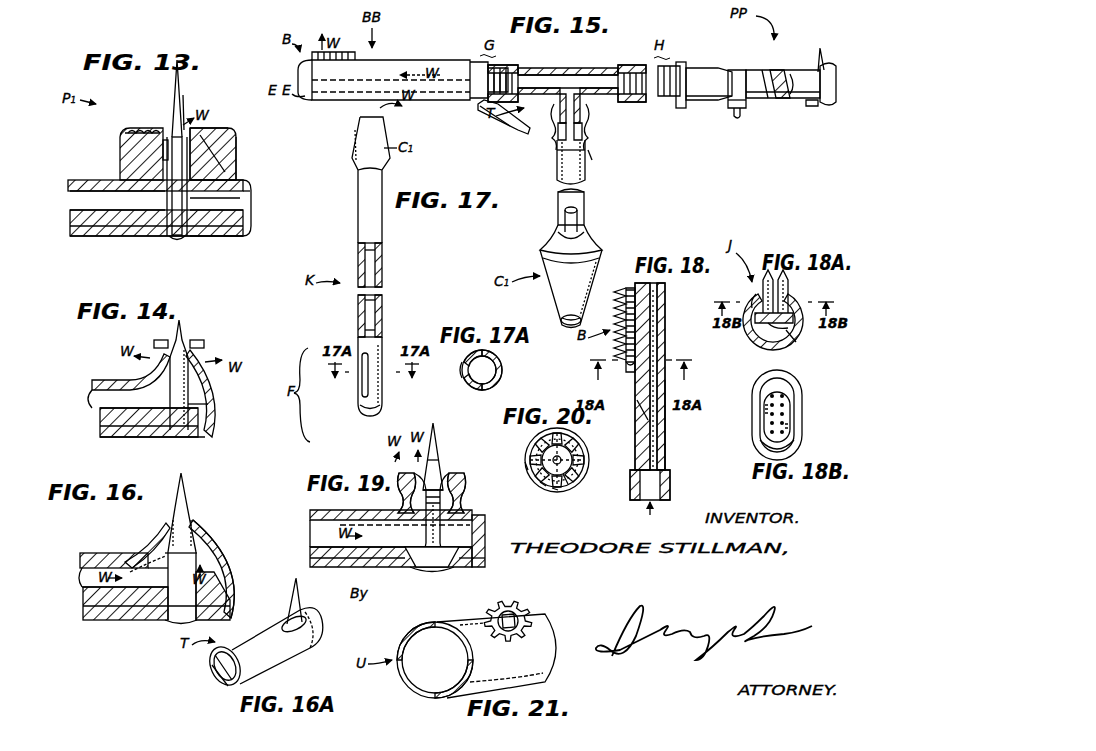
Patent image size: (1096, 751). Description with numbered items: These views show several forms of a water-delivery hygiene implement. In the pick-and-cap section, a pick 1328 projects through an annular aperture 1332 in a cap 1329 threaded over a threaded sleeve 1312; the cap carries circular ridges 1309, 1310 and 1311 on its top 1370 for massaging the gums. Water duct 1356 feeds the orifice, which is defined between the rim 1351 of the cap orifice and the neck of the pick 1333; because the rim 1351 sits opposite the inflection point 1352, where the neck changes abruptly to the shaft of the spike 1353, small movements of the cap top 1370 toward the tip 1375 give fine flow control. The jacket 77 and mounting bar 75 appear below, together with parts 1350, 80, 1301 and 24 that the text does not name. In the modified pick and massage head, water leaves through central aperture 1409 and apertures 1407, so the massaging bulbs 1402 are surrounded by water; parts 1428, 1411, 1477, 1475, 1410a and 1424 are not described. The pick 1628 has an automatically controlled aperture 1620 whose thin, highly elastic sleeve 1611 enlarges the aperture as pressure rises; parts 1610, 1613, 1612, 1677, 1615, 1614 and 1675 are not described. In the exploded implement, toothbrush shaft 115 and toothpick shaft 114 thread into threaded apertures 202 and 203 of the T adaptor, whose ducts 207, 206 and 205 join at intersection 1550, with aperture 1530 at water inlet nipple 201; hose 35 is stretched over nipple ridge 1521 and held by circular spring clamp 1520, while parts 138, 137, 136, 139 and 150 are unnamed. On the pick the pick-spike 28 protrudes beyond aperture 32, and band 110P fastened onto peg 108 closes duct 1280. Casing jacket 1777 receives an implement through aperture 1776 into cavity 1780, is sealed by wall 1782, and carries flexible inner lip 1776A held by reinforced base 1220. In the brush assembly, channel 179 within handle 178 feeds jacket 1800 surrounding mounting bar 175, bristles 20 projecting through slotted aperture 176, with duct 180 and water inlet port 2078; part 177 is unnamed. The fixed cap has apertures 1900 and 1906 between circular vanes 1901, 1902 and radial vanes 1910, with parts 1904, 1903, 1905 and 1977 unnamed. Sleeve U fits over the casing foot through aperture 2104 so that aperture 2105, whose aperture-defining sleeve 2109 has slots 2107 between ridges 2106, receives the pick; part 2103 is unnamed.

In FIG. 13, the tip of pick 1375 is at (180, 75).
In FIG. 13, the shaft of spike 1353 is at (183, 95).
In FIG. 13, the top of cap 1370 is at (132, 128).
In FIG. 13, the annular aperture 1332 is at (166, 140).
In FIG. 13, the pick 1328 is at (186, 112).
In FIG. 13, the inflection point 1352 is at (210, 128).
In FIG. 13, the circular ridge 1309 is at (190, 160).
In FIG. 13, the circular ridge 1311 is at (145, 135).
In FIG. 13, the rim of cap orifice 1351 is at (165, 146).
In FIG. 13, the neck of pick 1333 is at (172, 158).
In FIG. 13, the circular ridge 1310 is at (222, 134).
In FIG. 13, the cap 1329 is at (236, 146).
In FIG. 13, the threaded sleeve 1312 is at (233, 160).
In FIG. 13, the pipe upper wall 1350 is at (240, 178).
In FIG. 13, the pipe end 80 is at (238, 204).
In FIG. 13, the water duct 1356 is at (268, 192).
In FIG. 13, the pipe lower wall 1301 is at (240, 226).
In FIG. 13, the jacket 77 is at (70, 185).
In FIG. 15, the jacket 77 is at (332, 98).
In FIG. 13, the mounting bar 75 is at (72, 220).
In FIG. 15, the mounting bar 75 is at (762, 100).
In FIG. 19, the mounting bar 75 is at (318, 548).
In FIG. 13, the nub 24 is at (178, 242).
In FIG. 15, the nub 24 is at (808, 106).
In FIG. 14, the spike 1428 is at (181, 322).
In FIG. 14, the central aperture 1409 is at (190, 345).
In FIG. 14, the massaging bulb 1402 is at (200, 343).
In FIG. 14, the curved wall 1411 is at (212, 350).
In FIG. 14, the aperture 1407 is at (158, 345).
In FIG. 14, the pipe wall 1477 is at (105, 380).
In FIG. 14, the pipe 1475 is at (102, 410).
In FIG. 14, the inner wall 1410a is at (200, 406).
In FIG. 14, the bottom wall 1424 is at (190, 437).
In FIG. 16, the pick 1628 is at (185, 494).
In FIG. 16A, the pick 1628 is at (300, 600).
In FIG. 16, the hood 1610 is at (214, 522).
In FIG. 16A, the hood 1610 is at (318, 632).
In FIG. 16, the automatically controlled aperture 1620 is at (168, 522).
In FIG. 16A, the automatically controlled aperture 1620 is at (300, 616).
In FIG. 16, the flap 1613 is at (145, 548).
In FIG. 16, the flap hinge 1612 is at (135, 555).
In FIG. 16, the pipe wall 1677 is at (84, 556).
In FIG. 16A, the pipe wall 1677 is at (226, 688).
In FIG. 16, the sleeve 1611 is at (212, 540).
In FIG. 16, the shelf 1615 is at (200, 553).
In FIG. 16, the base block 1614 is at (212, 578).
In FIG. 16, the pipe 1675 is at (100, 595).
In FIG. 16A, the pipe 1675 is at (216, 676).
In FIG. 17, the jacket 1777 is at (383, 245).
In FIG. 17A, the jacket 1777 is at (494, 386).
In FIG. 17, the reinforced base 1220 is at (383, 266).
In FIG. 17A, the reinforced base 1220 is at (497, 368).
In FIG. 17, the cavity 1780 is at (368, 318).
In FIG. 17, the aperture 1776 is at (358, 380).
In FIG. 17, the wall 1782 is at (370, 416).
In FIG. 17A, the inner lip 1776A is at (464, 386).
In FIG. 15, the shaft 115 is at (474, 68).
In FIG. 15, the threaded aperture 202 is at (510, 62).
In FIG. 15, the point of intersection 1550 is at (575, 66).
In FIG. 15, the duct 206 is at (548, 82).
In FIG. 15, the duct 205 is at (592, 82).
In FIG. 15, the threaded aperture 203 is at (638, 62).
In FIG. 15, the duct 207 is at (586, 108).
In FIG. 15, the circular spring clamp 1520 is at (580, 118).
In FIG. 15, the water inlet nipple 201 is at (556, 110).
In FIG. 15, the nipple ridge 1521 is at (548, 154).
In FIG. 15, the hose 35 is at (590, 140).
In FIG. 18, the hose 35 is at (672, 476).
In FIG. 15, the aperture 1530 is at (590, 160).
In FIG. 15, the bore 138 is at (578, 218).
In FIG. 15, the shoulder 137 is at (584, 248).
In FIG. 15, the cone 136 is at (546, 252).
In FIG. 15, the cone wall 139 is at (556, 296).
In FIG. 15, the tip opening 150 is at (566, 322).
In FIG. 15, the shaft 114 is at (676, 70).
In FIG. 15, the band 110P is at (740, 58).
In FIG. 15, the peg 108 is at (734, 118).
In FIG. 15, the aperture 32 is at (812, 64).
In FIG. 15, the pick-spike 28 is at (820, 58).
In FIG. 15, the duct 1280 is at (806, 92).
In FIG. 18, the jacket 1800 is at (633, 287).
In FIG. 18A, the jacket 1800 is at (792, 342).
In FIG. 18, the channel 179 is at (652, 304).
In FIG. 18A, the channel 179 is at (762, 330).
In FIG. 18, the bristles 20 is at (625, 312).
In FIG. 18A, the bristles 20 is at (790, 284).
In FIG. 18B, the bristles 20 is at (786, 402).
In FIG. 18, the mounting bar 175 is at (636, 400).
In FIG. 18A, the mounting bar 175 is at (764, 340).
In FIG. 18, the water inlet port 2078 is at (658, 392).
In FIG. 18, the handle 178 is at (660, 417).
In FIG. 18A, the slotted aperture 176 is at (800, 296).
In FIG. 18B, the slotted aperture 176 is at (784, 386).
In FIG. 18A, the duct 180 is at (752, 302).
In FIG. 18B, the oval wall 177 is at (760, 394).
In FIG. 19, the spike 1904 is at (440, 452).
In FIG. 20, the spike 1904 is at (528, 474).
In FIG. 19, the aperture 1906 is at (446, 462).
In FIG. 20, the aperture 1906 is at (580, 461).
In FIG. 19, the circular vane 1902 is at (446, 482).
In FIG. 20, the circular vane 1902 is at (580, 476).
In FIG. 19, the aperture 1900 is at (462, 484).
In FIG. 20, the aperture 1900 is at (567, 438).
In FIG. 19, the circular vane 1901 is at (463, 486).
In FIG. 20, the circular vane 1901 is at (570, 489).
In FIG. 19, the collar leg 1903 is at (408, 508).
In FIG. 19, the pipe end 1905 is at (480, 522).
In FIG. 19, the pipe lower wall 1977 is at (461, 568).
In FIG. 20, the radial ridge 1910 is at (576, 447).
In FIG. 21, the aperture defining sleeve 2109 is at (530, 620).
In FIG. 21, the ridge 2106 is at (490, 618).
In FIG. 21, the aperture 2105 is at (528, 618).
In FIG. 21, the cylinder end 2103 is at (414, 640).
In FIG. 21, the slot 2107 is at (502, 642).
In FIG. 21, the aperture 2104 is at (418, 688).